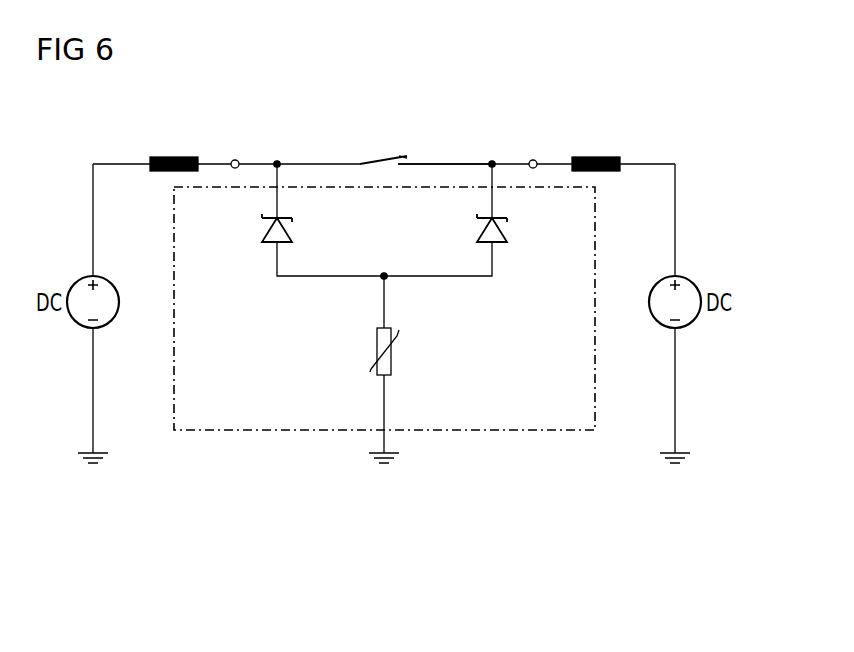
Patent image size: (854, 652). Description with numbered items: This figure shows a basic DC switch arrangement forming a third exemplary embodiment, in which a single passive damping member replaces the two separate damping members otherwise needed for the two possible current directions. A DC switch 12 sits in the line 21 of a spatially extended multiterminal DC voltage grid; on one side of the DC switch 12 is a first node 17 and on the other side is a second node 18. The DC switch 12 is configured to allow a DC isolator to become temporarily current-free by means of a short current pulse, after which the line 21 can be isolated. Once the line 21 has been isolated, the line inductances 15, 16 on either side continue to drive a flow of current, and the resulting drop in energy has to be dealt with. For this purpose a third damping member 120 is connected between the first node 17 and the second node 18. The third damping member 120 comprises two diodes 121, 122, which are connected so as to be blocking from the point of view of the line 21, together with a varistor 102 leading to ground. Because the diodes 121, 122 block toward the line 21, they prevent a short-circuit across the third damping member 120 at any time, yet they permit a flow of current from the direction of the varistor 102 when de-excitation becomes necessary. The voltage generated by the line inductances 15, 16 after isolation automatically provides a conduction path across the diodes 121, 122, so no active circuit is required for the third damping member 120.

The line inductance 16 is at (173, 156).
The line inductance 15 is at (594, 156).
The second node 18 is at (277, 161).
The first node 17 is at (491, 161).
The DC switch 12 is at (379, 161).
The line 21 is at (447, 163).
The diode 122 is at (262, 226).
The diode 121 is at (507, 226).
The varistor 102 is at (391, 362).
The third damping member 120 is at (528, 434).